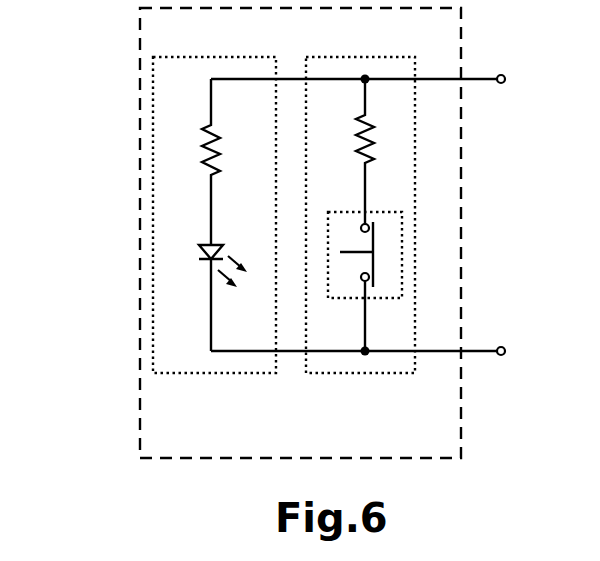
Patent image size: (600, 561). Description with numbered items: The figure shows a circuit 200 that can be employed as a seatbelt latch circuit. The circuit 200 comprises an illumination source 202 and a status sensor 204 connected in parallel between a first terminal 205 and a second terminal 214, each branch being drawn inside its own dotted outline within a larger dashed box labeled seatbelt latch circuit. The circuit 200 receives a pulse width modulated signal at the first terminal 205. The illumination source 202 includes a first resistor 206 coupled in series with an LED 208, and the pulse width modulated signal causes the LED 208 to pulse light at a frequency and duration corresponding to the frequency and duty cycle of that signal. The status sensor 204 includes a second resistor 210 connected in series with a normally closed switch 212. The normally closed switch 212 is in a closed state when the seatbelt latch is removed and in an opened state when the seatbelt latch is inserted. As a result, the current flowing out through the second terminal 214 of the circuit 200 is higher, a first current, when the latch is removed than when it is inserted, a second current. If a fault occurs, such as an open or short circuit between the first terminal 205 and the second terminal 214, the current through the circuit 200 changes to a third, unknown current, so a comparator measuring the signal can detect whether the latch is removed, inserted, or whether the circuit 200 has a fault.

The circuit 200 is at (140, 72).
The illumination source 202 is at (193, 57).
The status sensor 204 is at (335, 57).
The first terminal 205 is at (504, 74).
The resistor R1 206 is at (216, 162).
The LED 208 is at (214, 245).
The second resistor R2 210 is at (372, 135).
The normally closed switch 212 is at (378, 210).
The second terminal 214 is at (504, 346).